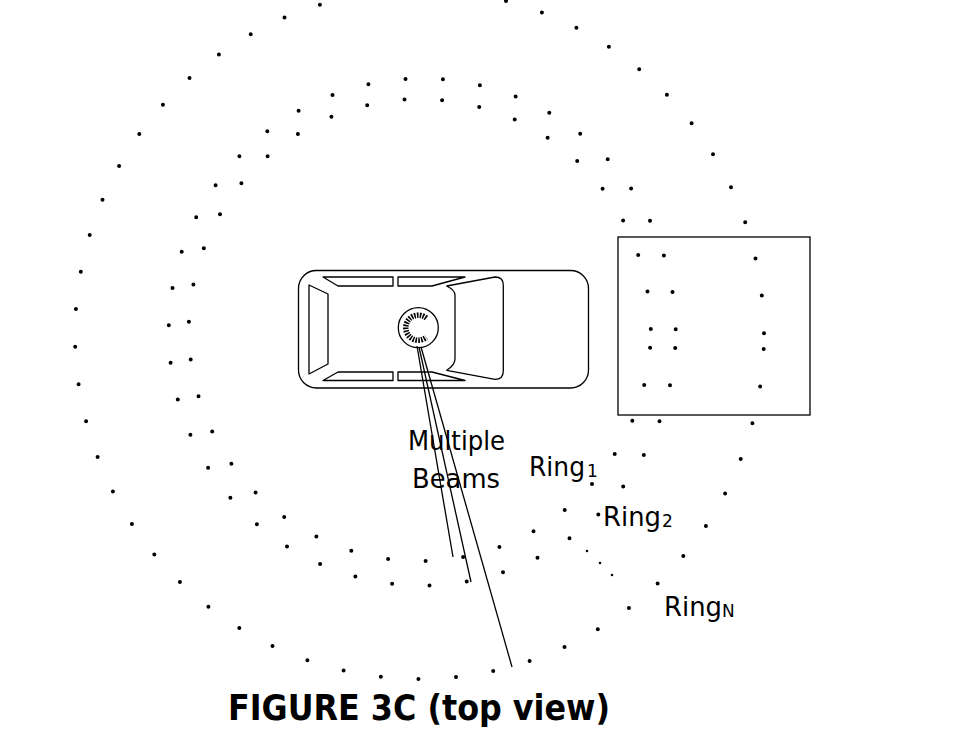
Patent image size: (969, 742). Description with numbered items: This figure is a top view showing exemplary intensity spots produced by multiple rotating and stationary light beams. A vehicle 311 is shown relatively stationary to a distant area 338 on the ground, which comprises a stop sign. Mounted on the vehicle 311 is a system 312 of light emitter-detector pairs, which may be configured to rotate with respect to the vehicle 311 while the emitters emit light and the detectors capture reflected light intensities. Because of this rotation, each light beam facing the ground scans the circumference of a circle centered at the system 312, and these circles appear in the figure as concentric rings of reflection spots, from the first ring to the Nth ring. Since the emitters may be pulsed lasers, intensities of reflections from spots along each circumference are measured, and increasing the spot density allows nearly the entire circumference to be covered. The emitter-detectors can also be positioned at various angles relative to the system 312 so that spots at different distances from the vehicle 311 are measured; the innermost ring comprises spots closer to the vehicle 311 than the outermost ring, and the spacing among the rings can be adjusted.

The vehicle 311 is at (430, 270).
The system 312 is at (415, 345).
The distant area 338 is at (776, 237).